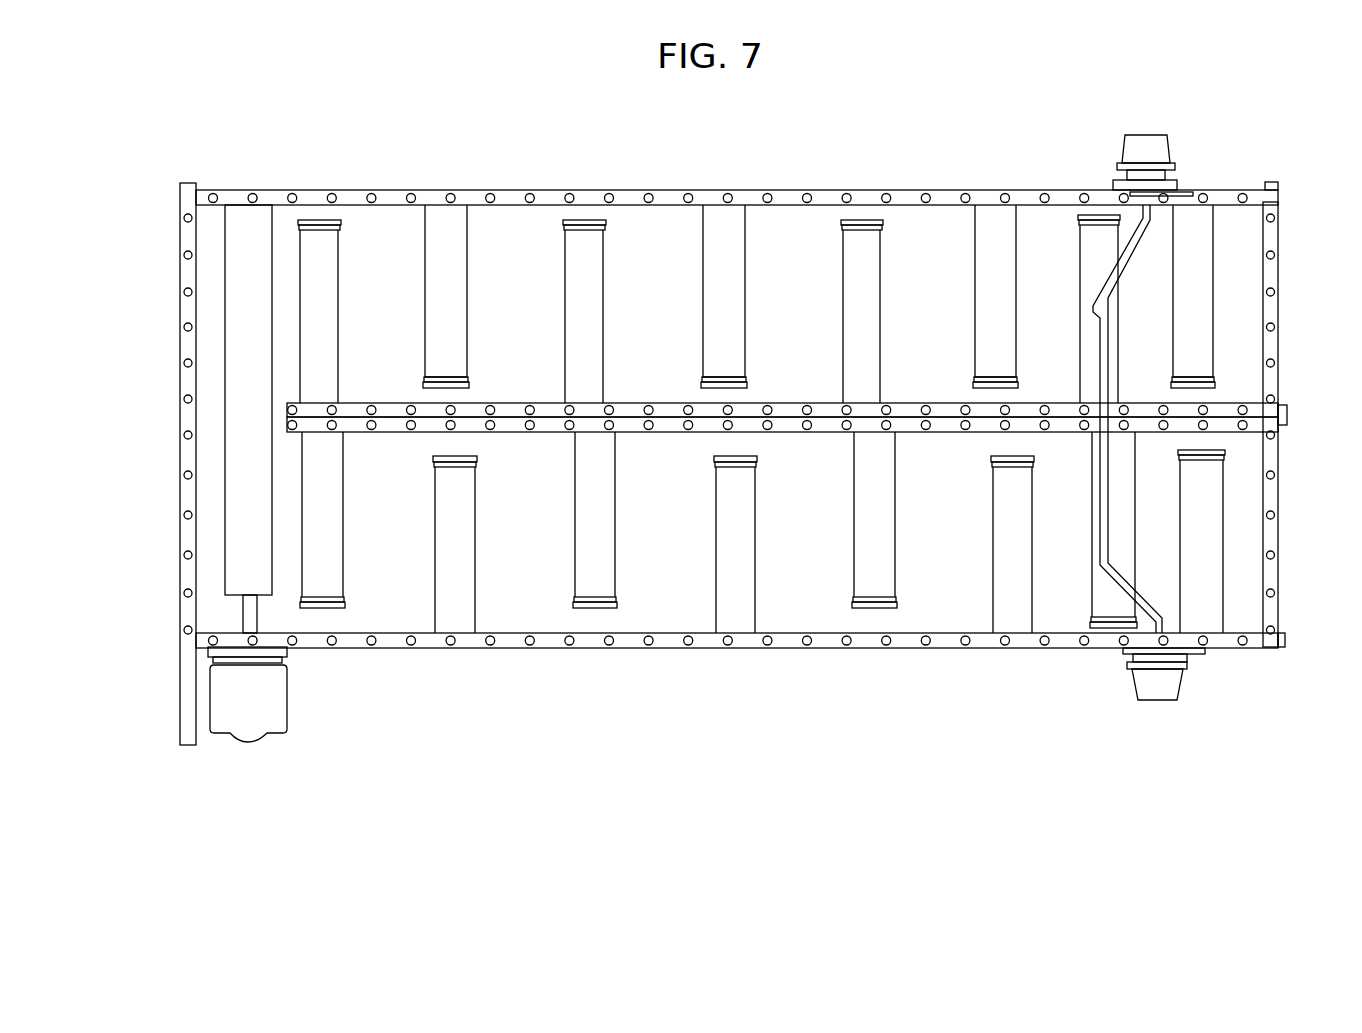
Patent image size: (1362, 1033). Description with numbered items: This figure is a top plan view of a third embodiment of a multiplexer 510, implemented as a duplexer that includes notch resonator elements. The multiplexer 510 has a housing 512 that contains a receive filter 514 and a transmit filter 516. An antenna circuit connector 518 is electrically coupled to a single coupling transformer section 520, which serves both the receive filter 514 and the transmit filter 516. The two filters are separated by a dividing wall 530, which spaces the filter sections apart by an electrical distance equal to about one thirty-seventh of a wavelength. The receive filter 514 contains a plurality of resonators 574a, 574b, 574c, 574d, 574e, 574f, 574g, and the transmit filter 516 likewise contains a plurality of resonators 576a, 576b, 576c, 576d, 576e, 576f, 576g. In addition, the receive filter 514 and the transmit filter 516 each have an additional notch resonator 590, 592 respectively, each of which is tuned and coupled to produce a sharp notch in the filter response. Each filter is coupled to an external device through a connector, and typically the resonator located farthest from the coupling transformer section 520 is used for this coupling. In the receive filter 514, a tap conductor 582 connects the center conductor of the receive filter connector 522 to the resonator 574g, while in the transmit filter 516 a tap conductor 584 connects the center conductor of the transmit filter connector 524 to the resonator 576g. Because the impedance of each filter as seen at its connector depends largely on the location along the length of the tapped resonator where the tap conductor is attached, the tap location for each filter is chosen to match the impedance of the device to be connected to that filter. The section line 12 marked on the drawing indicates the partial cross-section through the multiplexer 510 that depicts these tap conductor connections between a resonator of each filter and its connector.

The multiplexer 510 is at (284, 140).
The housing 512 is at (364, 190).
The receive filter 514 is at (402, 363).
The transmit filter 516 is at (407, 521).
The antenna circuit connector 518 is at (263, 695).
The coupling transformer section 520 is at (225, 380).
The receive filter connector 522 is at (1137, 140).
The transmit filter connector 524 is at (1133, 687).
The dividing wall 530 is at (507, 435).
The resonator 574a is at (335, 275).
The resonator 574b is at (476, 232).
The resonator 574c is at (565, 317).
The resonator 574d is at (740, 298).
The resonator 574e is at (881, 300).
The resonator 574f is at (975, 357).
The resonator 574g is at (1079, 265).
The resonator 576a is at (340, 548).
The resonator 576b is at (477, 593).
The resonator 576c is at (615, 558).
The resonator 576d is at (757, 558).
The resonator 576e is at (890, 553).
The resonator 576f is at (992, 518).
The resonator 576g is at (1092, 480).
The tap conductor 582 is at (1140, 207).
The tap conductor 584 is at (1123, 590).
The notch resonator 590 is at (1211, 253).
The notch resonator 592 is at (1218, 545).
The section line 12 is at (1193, 190).